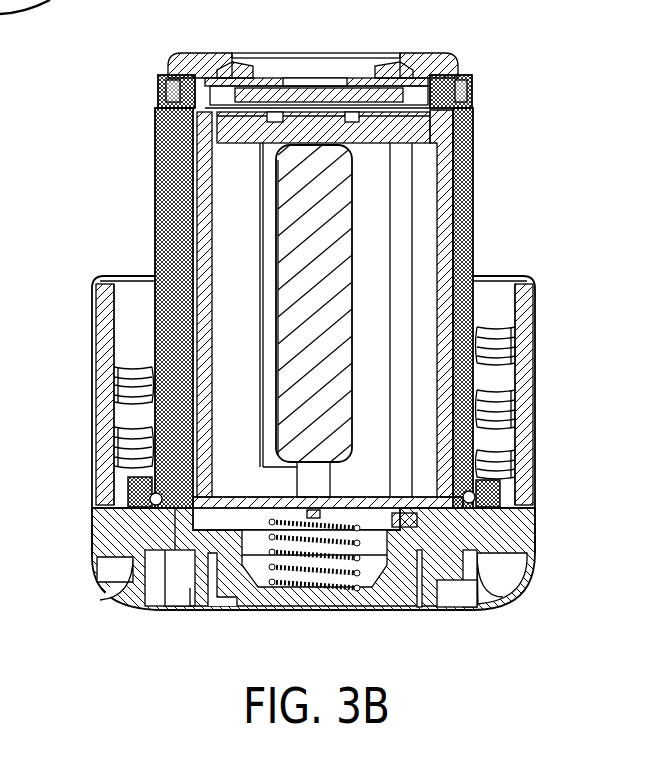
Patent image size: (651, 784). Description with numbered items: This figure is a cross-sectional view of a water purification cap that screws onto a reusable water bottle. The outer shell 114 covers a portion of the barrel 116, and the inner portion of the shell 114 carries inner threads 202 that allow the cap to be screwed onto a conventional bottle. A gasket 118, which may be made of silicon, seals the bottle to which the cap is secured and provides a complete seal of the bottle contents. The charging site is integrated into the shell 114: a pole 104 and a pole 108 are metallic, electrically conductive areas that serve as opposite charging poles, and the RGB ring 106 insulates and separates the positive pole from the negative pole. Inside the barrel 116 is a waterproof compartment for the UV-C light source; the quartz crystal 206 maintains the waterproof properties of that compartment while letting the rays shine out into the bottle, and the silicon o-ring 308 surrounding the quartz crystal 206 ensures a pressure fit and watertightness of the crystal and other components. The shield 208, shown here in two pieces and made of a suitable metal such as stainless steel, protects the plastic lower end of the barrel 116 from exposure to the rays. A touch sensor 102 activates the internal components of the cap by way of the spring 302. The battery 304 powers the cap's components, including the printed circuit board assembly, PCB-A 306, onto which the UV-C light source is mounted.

The touch sensor 102 is at (302, 610).
The pole 104 is at (223, 610).
The RGB ring 106 is at (205, 608).
The pole 108 is at (162, 608).
The shell 114 is at (92, 405).
The barrel 116 is at (155, 228).
The gasket 118 is at (163, 92).
The inner threads 202 is at (525, 277).
The quartz crystal 206 is at (420, 57).
The shield 208 is at (181, 53).
The spring 302 is at (362, 575).
The battery 304 is at (347, 223).
The PCB-A 306 is at (473, 120).
The silicon o-ring 308 is at (462, 73).